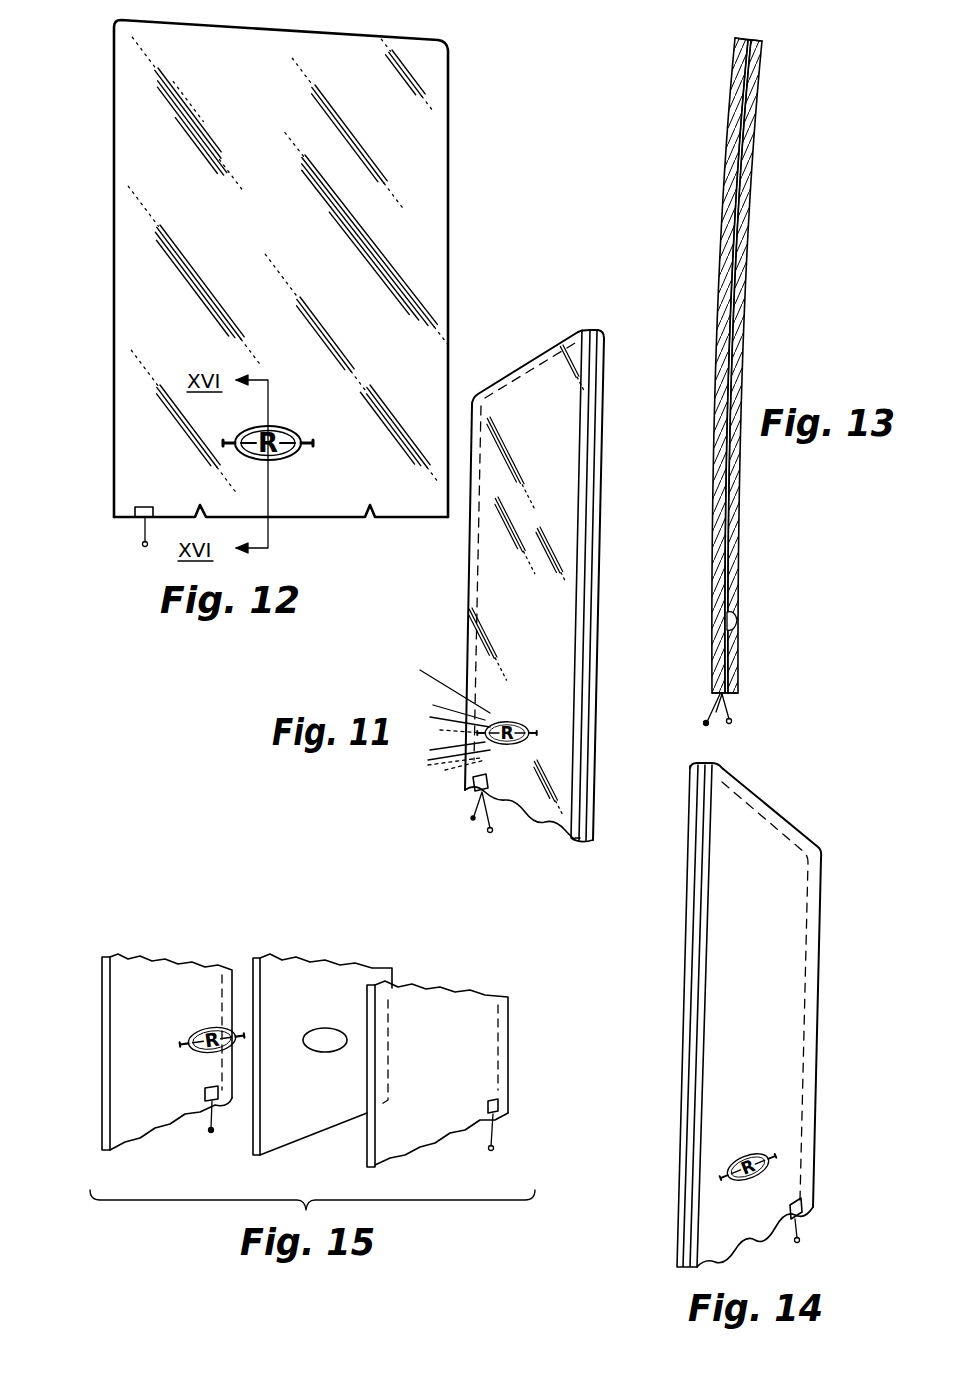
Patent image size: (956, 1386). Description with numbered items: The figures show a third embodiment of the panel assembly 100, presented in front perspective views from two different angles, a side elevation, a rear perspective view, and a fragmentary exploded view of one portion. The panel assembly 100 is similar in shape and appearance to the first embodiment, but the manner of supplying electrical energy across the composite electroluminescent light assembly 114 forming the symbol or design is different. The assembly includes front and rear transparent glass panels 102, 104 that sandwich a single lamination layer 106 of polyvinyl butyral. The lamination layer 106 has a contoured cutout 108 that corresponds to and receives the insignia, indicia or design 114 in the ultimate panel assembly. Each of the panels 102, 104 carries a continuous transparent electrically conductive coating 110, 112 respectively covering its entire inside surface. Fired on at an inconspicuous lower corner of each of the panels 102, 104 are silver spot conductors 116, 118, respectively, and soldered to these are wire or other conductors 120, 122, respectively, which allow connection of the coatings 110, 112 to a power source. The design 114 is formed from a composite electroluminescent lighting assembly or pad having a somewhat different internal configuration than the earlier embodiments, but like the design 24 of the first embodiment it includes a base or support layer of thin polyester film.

In FIG. 12, the panel assembly 100 is at (106, 79).
In FIG. 11, the panel assembly 100 is at (607, 337).
In FIG. 13, the panel assembly 100 is at (770, 95).
In FIG. 14, the panel assembly 100 is at (830, 846).
In FIG. 15, the panel assembly 100 is at (476, 984).
In FIG. 12, the front glass panel 102 is at (116, 148).
In FIG. 13, the front glass panel 102 is at (722, 186).
In FIG. 15, the front glass panel 102 is at (102, 1045).
In FIG. 13, the rear glass panel 104 is at (745, 200).
In FIG. 15, the rear glass panel 104 is at (488, 1035).
In FIG. 13, the lamination layer 106 is at (735, 262).
In FIG. 15, the lamination layer 106 is at (270, 1128).
In FIG. 15, the contoured cutout 108 is at (325, 1050).
In FIG. 15, the transparent electrically conductive coating 110 is at (156, 1054).
In FIG. 15, the transparent electrically conductive coating 112 is at (370, 1143).
In FIG. 12, the composite electroluminescent light assembly 114 is at (268, 443).
In FIG. 11, the composite electroluminescent light assembly 114 is at (513, 718).
In FIG. 13, the composite electroluminescent light assembly 114 is at (738, 624).
In FIG. 15, the composite electroluminescent light assembly 114 is at (200, 1030).
In FIG. 12, the silver spot conductor 116 is at (142, 505).
In FIG. 11, the silver spot conductor 116 is at (470, 780).
In FIG. 15, the silver spot conductor 116 is at (205, 1090).
In FIG. 14, the silver spot conductor 118 is at (803, 1205).
In FIG. 15, the silver spot conductor 118 is at (500, 1103).
In FIG. 12, the wire conductor 120 is at (143, 530).
In FIG. 11, the wire conductor 120 is at (471, 816).
In FIG. 13, the wire conductor 120 is at (714, 716).
In FIG. 15, the wire conductor 120 is at (209, 1118).
In FIG. 13, the wire conductor 122 is at (735, 712).
In FIG. 14, the wire conductor 122 is at (801, 1232).
In FIG. 15, the wire conductor 122 is at (497, 1138).
In FIG. 14, the design 24 is at (749, 1150).